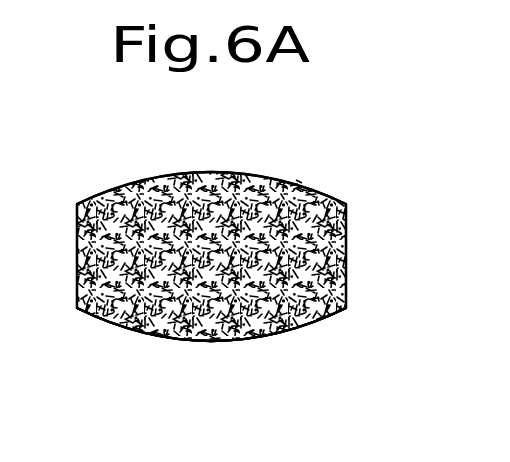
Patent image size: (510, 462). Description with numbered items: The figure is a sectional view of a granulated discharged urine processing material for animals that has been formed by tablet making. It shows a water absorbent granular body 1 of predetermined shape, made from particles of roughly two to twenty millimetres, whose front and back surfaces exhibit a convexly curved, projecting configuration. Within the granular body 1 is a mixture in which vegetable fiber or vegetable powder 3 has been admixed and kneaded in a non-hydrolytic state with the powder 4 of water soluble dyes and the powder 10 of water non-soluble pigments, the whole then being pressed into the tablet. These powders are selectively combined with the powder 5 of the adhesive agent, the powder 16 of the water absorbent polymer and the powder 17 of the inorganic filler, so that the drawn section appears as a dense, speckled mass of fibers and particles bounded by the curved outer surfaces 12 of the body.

The water absorbent granular body 1 is at (77, 238).
The vegetable fiber or vegetable powder 3 is at (77, 265).
The powder of water soluble dyes 4 is at (125, 326).
The powder of water non-soluble pigments 10 is at (211, 324).
The powder of the adhesive agent 5 is at (273, 333).
The curved surface 12 is at (195, 175).
The powder of the water absorbent polymer 16 is at (300, 182).
The powder of the inorganic filler 17 is at (346, 233).